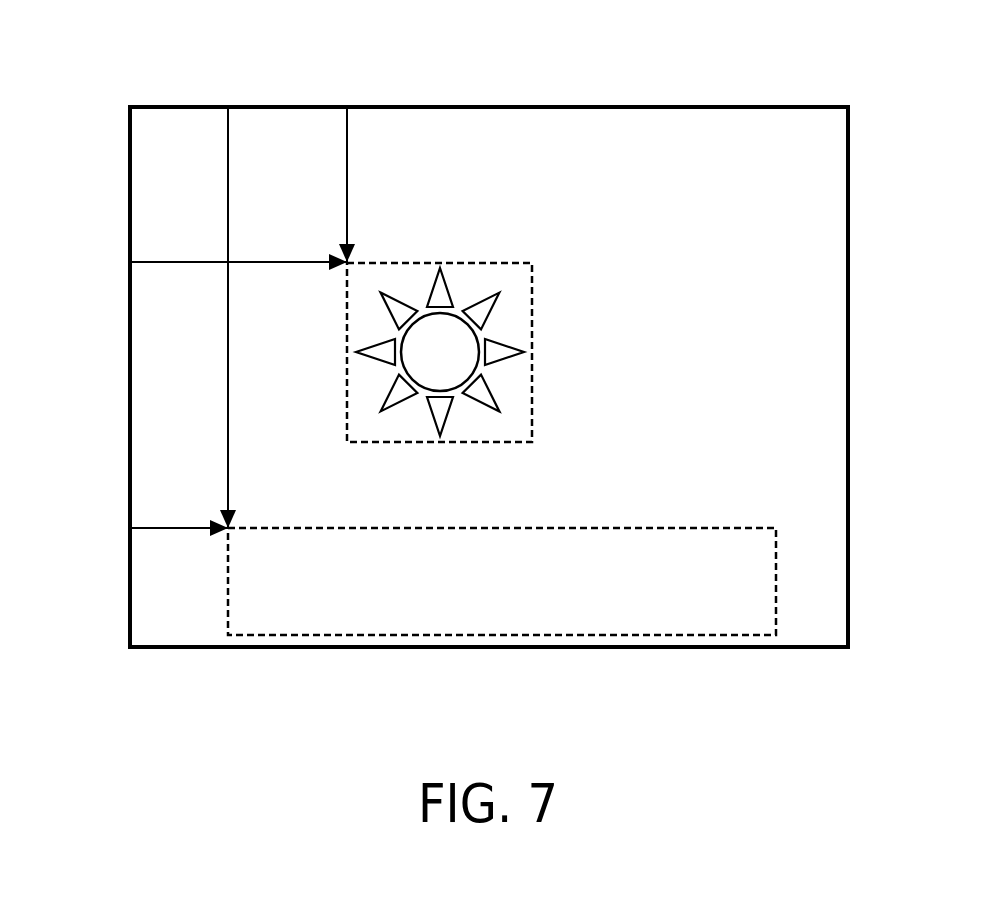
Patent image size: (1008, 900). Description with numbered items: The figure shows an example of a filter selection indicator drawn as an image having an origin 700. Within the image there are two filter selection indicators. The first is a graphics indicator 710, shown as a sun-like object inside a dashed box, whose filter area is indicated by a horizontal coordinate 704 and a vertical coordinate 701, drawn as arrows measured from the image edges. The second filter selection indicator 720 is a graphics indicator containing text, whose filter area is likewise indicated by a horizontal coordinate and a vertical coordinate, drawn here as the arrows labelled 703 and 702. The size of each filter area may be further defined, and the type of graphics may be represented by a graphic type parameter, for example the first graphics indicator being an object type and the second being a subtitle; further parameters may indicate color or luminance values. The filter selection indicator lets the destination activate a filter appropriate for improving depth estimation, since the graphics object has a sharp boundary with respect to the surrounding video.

The origin 700 is at (592, 105).
The vertical coordinate 701 is at (184, 262).
The horizontal reference line for text position 702 is at (184, 528).
The vertical reference line for text position 703 is at (228, 152).
The horizontal coordinate 704 is at (347, 152).
The graphics indicator 710 is at (456, 262).
The filter selection indicator 720 is at (653, 527).